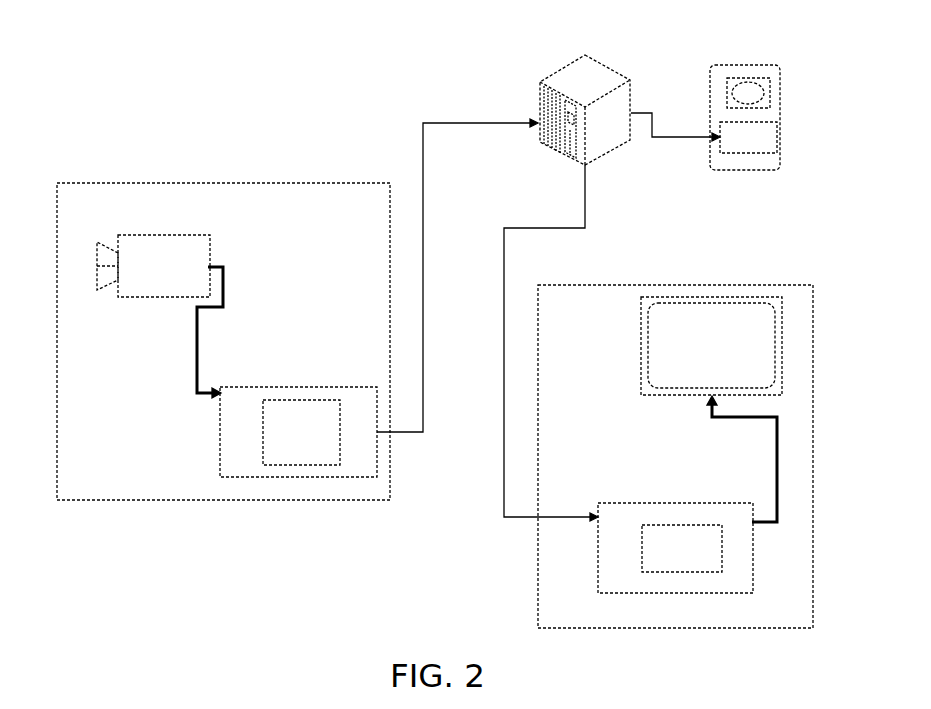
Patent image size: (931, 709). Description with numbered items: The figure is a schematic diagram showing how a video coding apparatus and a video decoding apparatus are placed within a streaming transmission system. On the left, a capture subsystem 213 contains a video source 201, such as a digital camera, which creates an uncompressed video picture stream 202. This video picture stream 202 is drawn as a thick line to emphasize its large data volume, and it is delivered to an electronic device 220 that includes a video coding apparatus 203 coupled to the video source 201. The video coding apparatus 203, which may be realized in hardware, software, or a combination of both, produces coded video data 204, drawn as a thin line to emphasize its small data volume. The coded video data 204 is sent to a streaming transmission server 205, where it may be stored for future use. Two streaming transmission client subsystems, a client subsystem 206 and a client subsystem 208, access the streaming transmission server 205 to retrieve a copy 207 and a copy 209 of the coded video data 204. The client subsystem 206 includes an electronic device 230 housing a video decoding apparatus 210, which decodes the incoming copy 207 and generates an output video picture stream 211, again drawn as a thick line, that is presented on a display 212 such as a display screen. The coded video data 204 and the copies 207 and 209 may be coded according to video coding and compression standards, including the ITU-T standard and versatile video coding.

The video source 201 is at (165, 235).
The video picture stream 202 is at (197, 337).
The video coding apparatus 203 is at (301, 432).
The coded video data 204 is at (422, 155).
The streaming transmission server 205 is at (537, 100).
The client subsystem 206 is at (537, 602).
The copy of the coded video data 207 is at (503, 316).
The client subsystem 208 is at (710, 95).
The copy of the coded video data 209 is at (653, 146).
The video decoding apparatus 210 is at (682, 548).
The output video picture stream 211 is at (776, 492).
The display 212 is at (641, 370).
The capture subsystem 213 is at (245, 500).
The electronic device 220 is at (297, 387).
The electronic device 230 is at (597, 582).